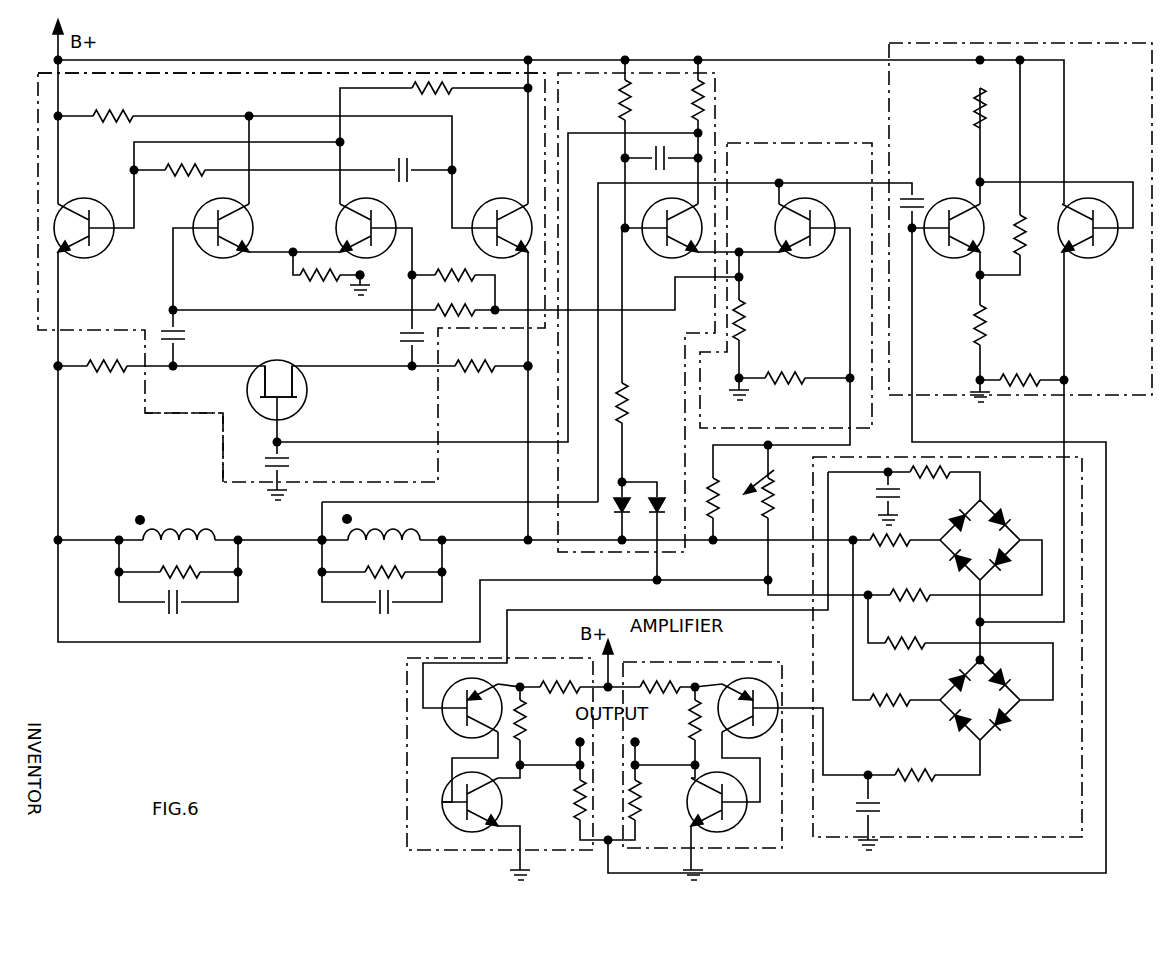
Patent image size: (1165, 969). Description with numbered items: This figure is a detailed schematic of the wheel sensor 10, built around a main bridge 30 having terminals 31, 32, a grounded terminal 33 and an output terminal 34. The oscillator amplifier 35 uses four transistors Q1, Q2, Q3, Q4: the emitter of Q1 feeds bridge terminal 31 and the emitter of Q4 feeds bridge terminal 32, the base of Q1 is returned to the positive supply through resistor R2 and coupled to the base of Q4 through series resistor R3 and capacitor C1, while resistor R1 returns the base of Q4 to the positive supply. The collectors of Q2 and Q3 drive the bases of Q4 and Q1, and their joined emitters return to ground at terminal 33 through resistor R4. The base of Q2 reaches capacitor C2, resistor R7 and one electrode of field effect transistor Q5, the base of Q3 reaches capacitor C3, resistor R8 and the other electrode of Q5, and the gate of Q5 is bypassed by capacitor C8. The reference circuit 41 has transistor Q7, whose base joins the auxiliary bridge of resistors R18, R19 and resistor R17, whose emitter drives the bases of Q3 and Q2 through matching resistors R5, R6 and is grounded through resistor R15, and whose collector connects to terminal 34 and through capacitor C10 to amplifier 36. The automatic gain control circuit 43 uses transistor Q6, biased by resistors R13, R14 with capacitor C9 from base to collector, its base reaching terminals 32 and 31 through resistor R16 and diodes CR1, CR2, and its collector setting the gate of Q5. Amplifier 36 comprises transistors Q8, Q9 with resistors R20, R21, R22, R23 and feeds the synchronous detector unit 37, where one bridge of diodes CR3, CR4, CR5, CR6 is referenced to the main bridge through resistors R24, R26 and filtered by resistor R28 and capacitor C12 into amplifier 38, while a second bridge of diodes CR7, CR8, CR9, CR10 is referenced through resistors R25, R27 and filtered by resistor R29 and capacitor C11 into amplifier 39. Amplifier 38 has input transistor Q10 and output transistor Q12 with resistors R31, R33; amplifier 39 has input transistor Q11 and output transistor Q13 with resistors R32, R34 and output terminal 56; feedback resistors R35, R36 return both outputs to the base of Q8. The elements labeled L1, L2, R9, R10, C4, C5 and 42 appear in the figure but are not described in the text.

The wheel sensor 10 is at (348, 663).
The main bridge 30 is at (182, 472).
The bridge terminal 31 is at (62, 372).
The bridge terminal 32 is at (532, 372).
The bridge terminal 33 is at (364, 272).
The output terminal 34 is at (320, 542).
The oscillator amplifier 35 is at (378, 72).
The amplifier 36 is at (888, 44).
The synchronous detector unit 37 is at (1082, 837).
The amplifier 38 is at (405, 760).
The amplifier 39 is at (712, 662).
The reference circuit 41 is at (862, 140).
The potentiometer wiper 42 is at (773, 473).
The automatic gain control circuit 43 is at (588, 70).
The output terminal 56 is at (640, 740).
The transistor Q1 is at (84, 258).
The transistor Q2 is at (212, 262).
The transistor Q3 is at (384, 206).
The transistor Q4 is at (502, 228).
The field effect transistor Q5 is at (310, 400).
The transistor Q6 is at (648, 255).
The transistor Q7 is at (796, 258).
The transistor Q8 is at (946, 256).
The transistor Q9 is at (1106, 258).
The input transistor Q10 is at (450, 734).
The input transistor Q11 is at (760, 676).
The output stage transistor Q12 is at (466, 820).
The output transistor Q13 is at (730, 820).
The resistor R1 is at (128, 106).
The resistor R2 is at (440, 94).
The resistor R3 is at (184, 162).
The resistor R4 is at (316, 282).
The resistor R5 is at (466, 268).
The resistor R6 is at (482, 316).
The resistor R7 is at (122, 358).
The resistor R8 is at (476, 376).
The resistor R9 is at (172, 568).
The resistor R10 is at (380, 568).
The resistor R13 is at (618, 104).
The resistor R14 is at (690, 104).
The resistor R15 is at (746, 322).
The resistor R16 is at (628, 494).
The resistor R17 is at (784, 366).
The resistor R18 is at (731, 484).
The resistor R19 is at (762, 506).
The resistor R20 is at (972, 108).
The resistor R21 is at (972, 324).
The resistor R22 is at (1024, 258).
The resistor R23 is at (1020, 372).
The resistor R24 is at (896, 546).
The resistor R25 is at (896, 706).
The resistor R26 is at (912, 602).
The resistor R27 is at (900, 650).
The resistor R28 is at (930, 485).
The output resistor R29 is at (908, 768).
The resistor R31 is at (568, 682).
The resistor R32 is at (678, 682).
The resistor R33 is at (528, 724).
The resistor R34 is at (678, 732).
The resistor R35 is at (574, 804).
The resistor R36 is at (638, 806).
The capacitor C1 is at (396, 160).
The capacitor C2 is at (188, 334).
The capacitor C3 is at (398, 336).
The capacitor C4 is at (168, 612).
The capacitor C5 is at (378, 612).
The capacitor C8 is at (290, 462).
The capacitor C9 is at (656, 148).
The capacitor C10 is at (926, 196).
The capacitor C11 is at (882, 806).
The capacitor C12 is at (876, 492).
The inductor L1 is at (176, 530).
The inductor L2 is at (386, 530).
The diode CR1 is at (612, 504).
The diode CR2 is at (662, 496).
The diode CR3 is at (952, 516).
The diode CR4 is at (954, 566).
The diode CR5 is at (1006, 512).
The diode CR6 is at (1004, 570).
The diode CR7 is at (954, 676).
The diode CR8 is at (954, 730).
The diode CR9 is at (1006, 686).
The diode CR10 is at (1008, 728).